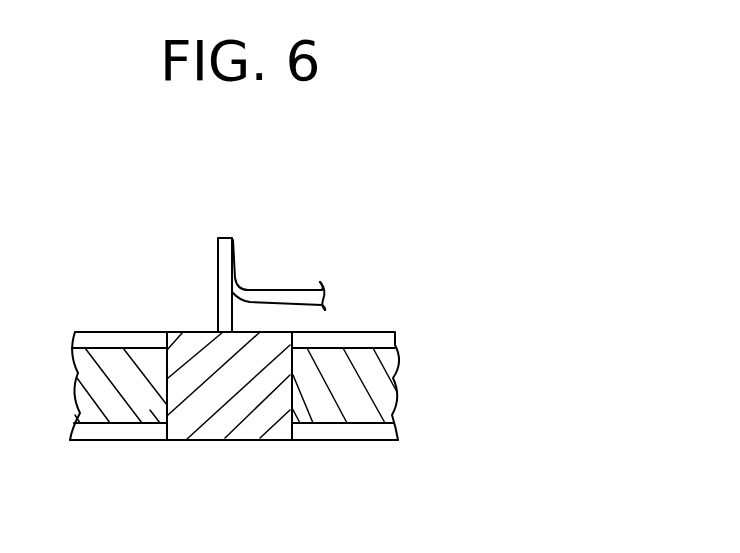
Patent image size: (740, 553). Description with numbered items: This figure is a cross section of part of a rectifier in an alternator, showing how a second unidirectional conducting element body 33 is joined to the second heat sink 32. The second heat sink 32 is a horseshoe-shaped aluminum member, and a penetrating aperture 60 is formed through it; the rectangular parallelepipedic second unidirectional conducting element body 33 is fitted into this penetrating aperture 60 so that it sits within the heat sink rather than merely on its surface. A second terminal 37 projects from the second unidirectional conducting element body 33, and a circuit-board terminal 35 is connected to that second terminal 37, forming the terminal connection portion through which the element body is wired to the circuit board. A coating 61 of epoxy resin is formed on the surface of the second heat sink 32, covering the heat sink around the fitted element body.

The second heat sink 32 is at (353, 387).
The second unidirectional conducting element body 33 is at (253, 383).
The circuit-board terminal 35 is at (292, 292).
The second terminal 37 is at (223, 280).
The penetrating aperture 60 is at (168, 377).
The coating 61 is at (352, 331).